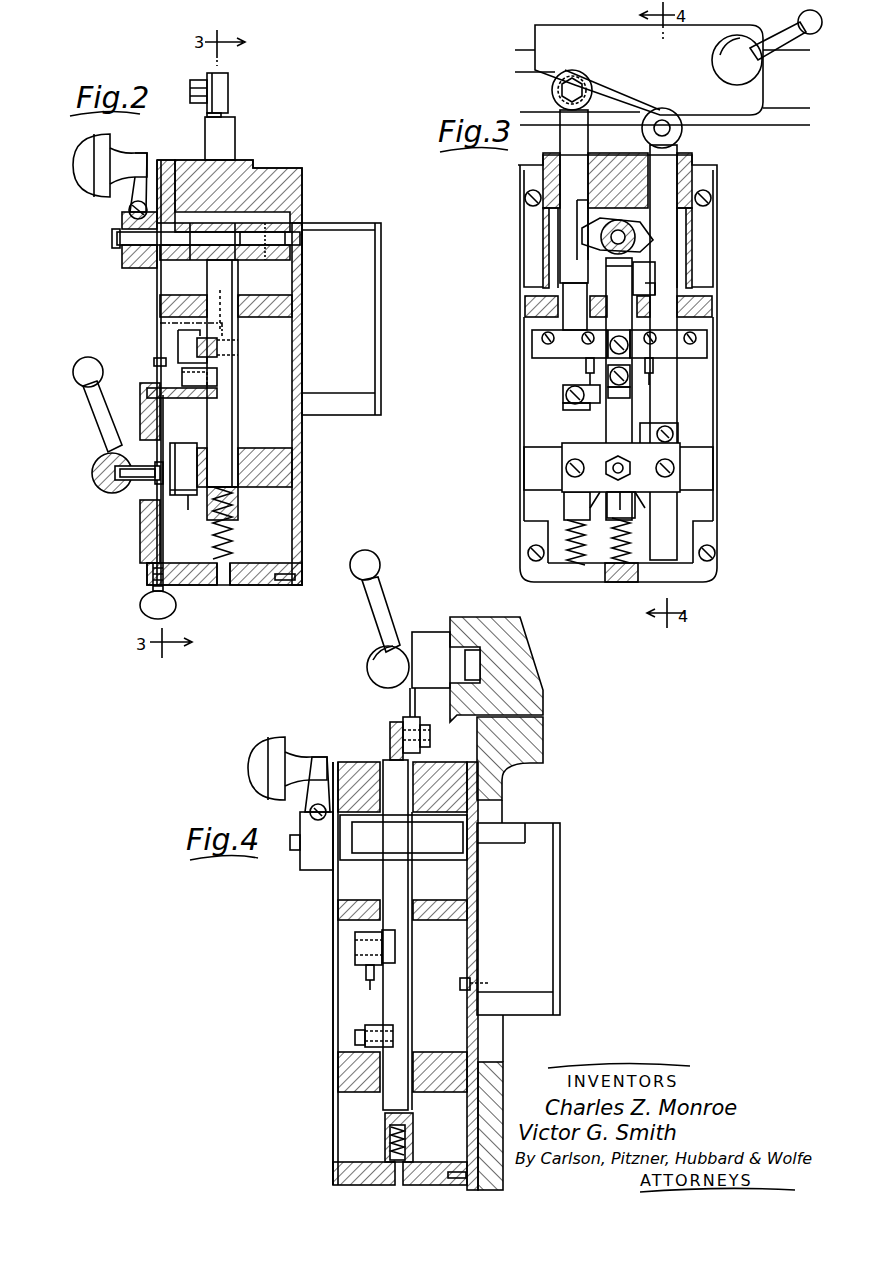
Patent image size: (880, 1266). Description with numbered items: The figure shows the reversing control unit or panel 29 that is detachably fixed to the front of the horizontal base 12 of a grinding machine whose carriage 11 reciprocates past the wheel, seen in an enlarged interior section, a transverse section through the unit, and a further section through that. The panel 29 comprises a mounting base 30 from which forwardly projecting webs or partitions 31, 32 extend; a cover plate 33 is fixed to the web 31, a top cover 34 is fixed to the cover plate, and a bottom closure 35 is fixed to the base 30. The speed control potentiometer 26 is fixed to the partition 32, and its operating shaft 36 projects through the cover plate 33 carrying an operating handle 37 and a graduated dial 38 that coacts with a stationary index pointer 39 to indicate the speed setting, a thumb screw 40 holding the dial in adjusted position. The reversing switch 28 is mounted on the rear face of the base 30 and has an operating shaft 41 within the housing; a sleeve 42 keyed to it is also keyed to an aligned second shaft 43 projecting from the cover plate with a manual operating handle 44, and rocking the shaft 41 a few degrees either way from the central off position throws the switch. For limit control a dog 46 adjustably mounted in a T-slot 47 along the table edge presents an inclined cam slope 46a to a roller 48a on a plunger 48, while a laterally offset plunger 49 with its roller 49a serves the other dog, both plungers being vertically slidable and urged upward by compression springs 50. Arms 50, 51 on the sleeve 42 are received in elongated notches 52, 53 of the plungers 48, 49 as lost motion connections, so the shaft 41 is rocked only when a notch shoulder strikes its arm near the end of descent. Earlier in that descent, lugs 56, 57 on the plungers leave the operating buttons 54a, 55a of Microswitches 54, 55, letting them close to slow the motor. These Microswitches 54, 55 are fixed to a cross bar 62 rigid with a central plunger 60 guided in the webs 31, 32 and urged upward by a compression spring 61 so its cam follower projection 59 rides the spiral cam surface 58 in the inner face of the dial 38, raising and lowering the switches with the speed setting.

In FIG. 3, the carriage 11 is at (785, 112).
In FIG. 4, the carriage 11 is at (490, 617).
In FIG. 4, the horizontal base 12 is at (532, 763).
In FIG. 2, the speed control potentiometer 26 is at (185, 443).
In FIG. 3, the speed control potentiometer 26 is at (614, 440).
In FIG. 2, the reversing switch 28 is at (345, 222).
In FIG. 4, the reversing switch 28 is at (548, 912).
In FIG. 2, the control panel 29 is at (262, 168).
In FIG. 3, the control panel 29 is at (717, 190).
In FIG. 4, the control panel 29 is at (322, 904).
In FIG. 2, the mounting base 30 is at (302, 516).
In FIG. 4, the mounting base 30 is at (478, 950).
In FIG. 2, the web 31 is at (258, 317).
In FIG. 3, the web 31 is at (525, 304).
In FIG. 4, the web 31 is at (436, 902).
In FIG. 2, the partition 32 is at (272, 455).
In FIG. 3, the partition 32 is at (540, 464).
In FIG. 4, the partition 32 is at (440, 1052).
In FIG. 2, the cover plate 33 is at (160, 288).
In FIG. 4, the cover plate 33 is at (333, 1118).
In FIG. 2, the top cover 34 is at (200, 170).
In FIG. 3, the top cover 34 is at (618, 162).
In FIG. 4, the top cover 34 is at (445, 772).
In FIG. 2, the bottom closure 35 is at (256, 585).
In FIG. 3, the bottom closure 35 is at (614, 582).
In FIG. 4, the bottom closure 35 is at (358, 1170).
In FIG. 2, the operating shaft 36 is at (95, 476).
In FIG. 3, the operating shaft 36 is at (607, 468).
In FIG. 2, the operating handle 37 is at (90, 410).
In FIG. 2, the graduated dial 38 is at (140, 400).
In FIG. 2, the stationary index pointer 39 is at (154, 362).
In FIG. 2, the thumb screw 40 is at (140, 606).
In FIG. 2, the operating shaft 41 is at (258, 260).
In FIG. 2, the sleeve 42 is at (242, 260).
In FIG. 3, the sleeve 42 is at (612, 222).
In FIG. 2, the second shaft 43 is at (192, 247).
In FIG. 2, the manual operating handle 44 is at (85, 188).
In FIG. 4, the manual operating handle 44 is at (255, 760).
In FIG. 3, the dog 46 is at (597, 36).
In FIG. 4, the dog 46 is at (412, 632).
In FIG. 3, the inclined cam slope 46a is at (640, 100).
In FIG. 4, the T-slot 47 is at (465, 668).
In FIG. 3, the plunger 48 is at (677, 232).
In FIG. 4, the plunger 48 is at (383, 878).
In FIG. 3, the roller 48a is at (684, 134).
In FIG. 4, the roller 48a is at (403, 720).
In FIG. 2, the plunger 49 is at (233, 138).
In FIG. 3, the plunger 49 is at (560, 230).
In FIG. 3, the roller 49a is at (552, 92).
In FIG. 3, the compression spring 50 is at (598, 540).
In FIG. 4, the compression spring 50 is at (413, 1134).
In FIG. 3, the arm 51 is at (580, 283).
In FIG. 3, the elongated notch 52 is at (657, 299).
In FIG. 3, the elongated notch 53 is at (577, 212).
In FIG. 3, the Microswitch 54 is at (707, 346).
In FIG. 4, the Microswitch 54 is at (355, 950).
In FIG. 3, the operating button 54a is at (653, 380).
In FIG. 4, the operating button 54a is at (368, 980).
In FIG. 2, the Microswitch 55 is at (178, 332).
In FIG. 3, the Microswitch 55 is at (532, 344).
In FIG. 3, the operating button 55a is at (586, 380).
In FIG. 3, the lug 56 is at (647, 426).
In FIG. 4, the lug 56 is at (372, 1026).
In FIG. 3, the lug 57 is at (592, 405).
In FIG. 2, the spiral cam surface 58 is at (165, 528).
In FIG. 2, the cam follower projection 59 is at (168, 398).
In FIG. 3, the cam follower projection 59 is at (619, 391).
In FIG. 2, the plunger 60 is at (238, 406).
In FIG. 3, the plunger 60 is at (632, 282).
In FIG. 2, the compression spring 61 is at (230, 533).
In FIG. 3, the compression spring 61 is at (612, 552).
In FIG. 2, the cross bar 62 is at (217, 354).
In FIG. 3, the cross bar 62 is at (628, 350).
In FIG. 4, the cross bar 62 is at (395, 950).